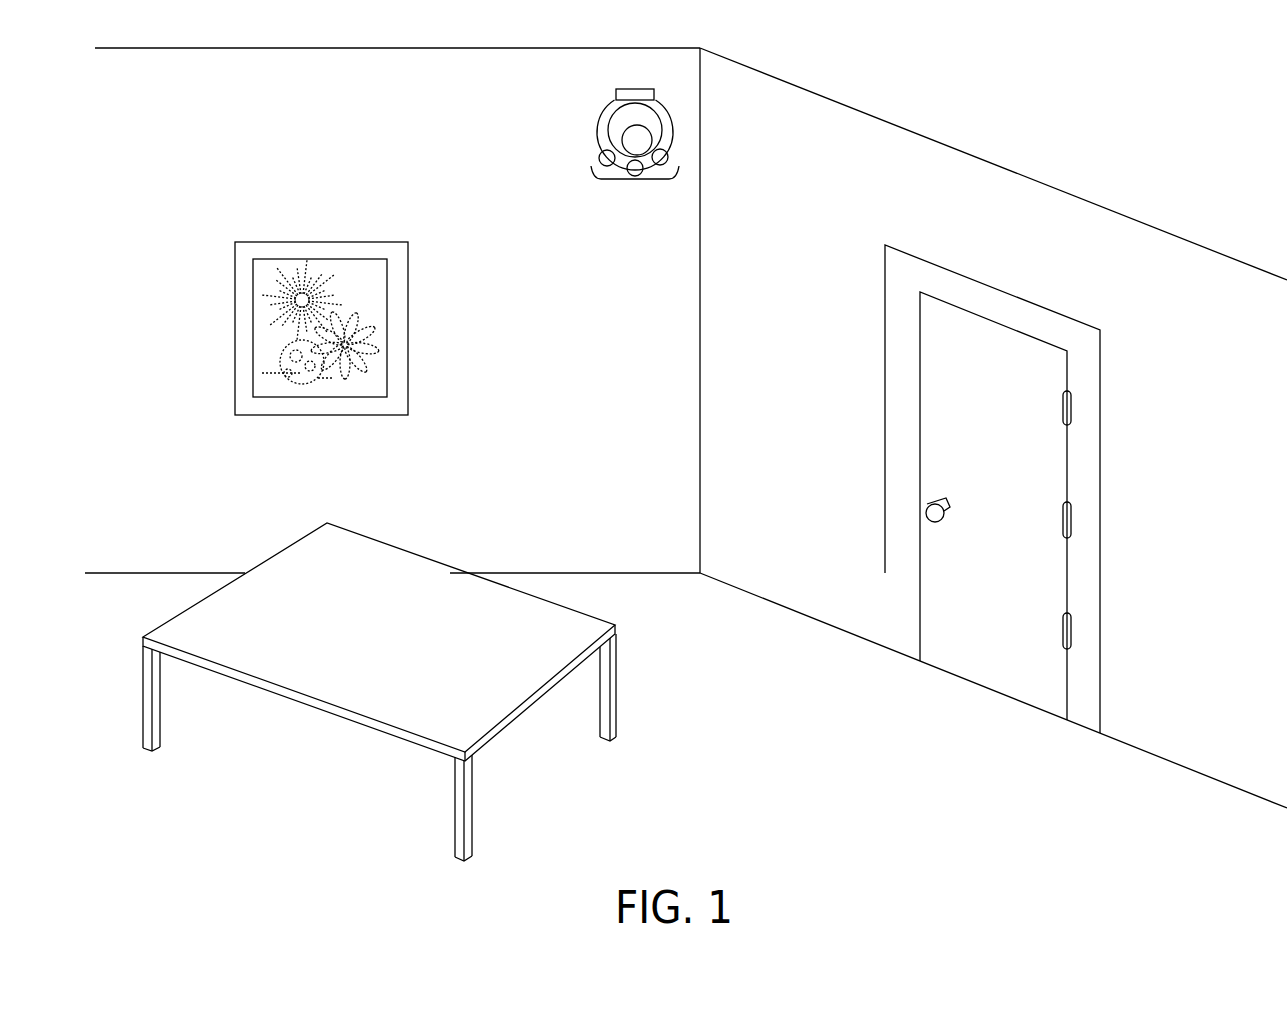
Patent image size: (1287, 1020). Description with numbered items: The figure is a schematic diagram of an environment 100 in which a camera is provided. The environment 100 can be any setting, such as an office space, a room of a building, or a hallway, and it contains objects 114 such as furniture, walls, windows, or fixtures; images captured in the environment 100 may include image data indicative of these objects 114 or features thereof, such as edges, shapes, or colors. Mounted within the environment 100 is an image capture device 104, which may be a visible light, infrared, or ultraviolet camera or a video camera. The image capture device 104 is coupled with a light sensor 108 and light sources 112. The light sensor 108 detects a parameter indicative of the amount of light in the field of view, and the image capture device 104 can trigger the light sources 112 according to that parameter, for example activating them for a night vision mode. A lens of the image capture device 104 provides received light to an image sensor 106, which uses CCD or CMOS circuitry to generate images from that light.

The environment 100 is at (692, 24).
The image capture device 104 is at (596, 132).
The image sensor 106 is at (641, 146).
The light sensor 108 is at (654, 92).
The light source 112 is at (635, 179).
The objects 114 is at (408, 387).